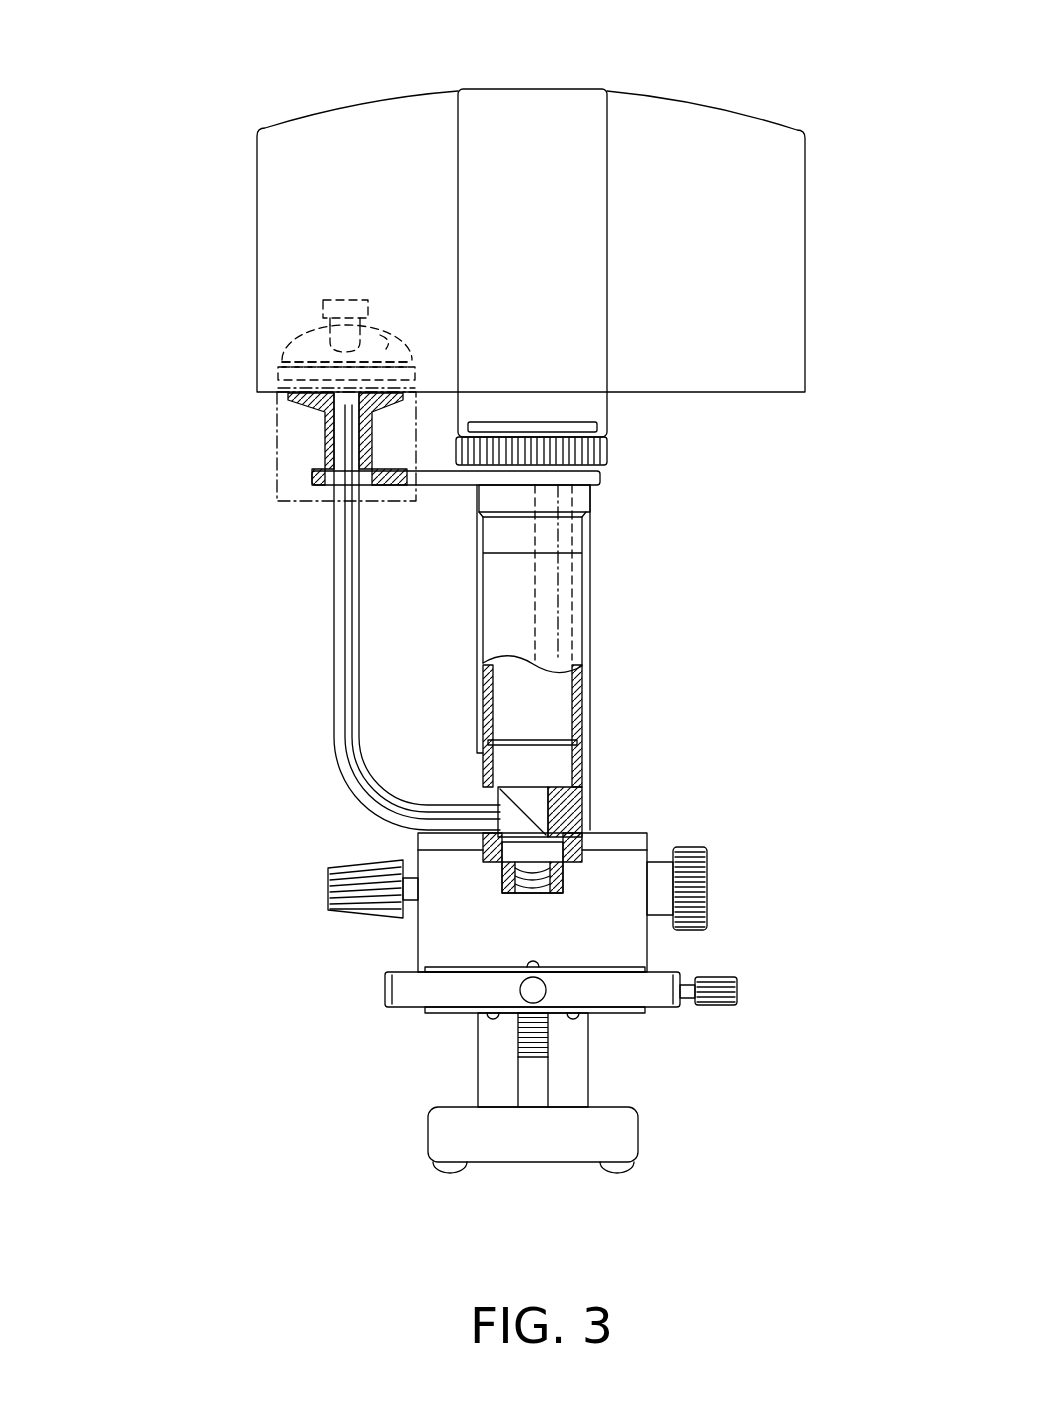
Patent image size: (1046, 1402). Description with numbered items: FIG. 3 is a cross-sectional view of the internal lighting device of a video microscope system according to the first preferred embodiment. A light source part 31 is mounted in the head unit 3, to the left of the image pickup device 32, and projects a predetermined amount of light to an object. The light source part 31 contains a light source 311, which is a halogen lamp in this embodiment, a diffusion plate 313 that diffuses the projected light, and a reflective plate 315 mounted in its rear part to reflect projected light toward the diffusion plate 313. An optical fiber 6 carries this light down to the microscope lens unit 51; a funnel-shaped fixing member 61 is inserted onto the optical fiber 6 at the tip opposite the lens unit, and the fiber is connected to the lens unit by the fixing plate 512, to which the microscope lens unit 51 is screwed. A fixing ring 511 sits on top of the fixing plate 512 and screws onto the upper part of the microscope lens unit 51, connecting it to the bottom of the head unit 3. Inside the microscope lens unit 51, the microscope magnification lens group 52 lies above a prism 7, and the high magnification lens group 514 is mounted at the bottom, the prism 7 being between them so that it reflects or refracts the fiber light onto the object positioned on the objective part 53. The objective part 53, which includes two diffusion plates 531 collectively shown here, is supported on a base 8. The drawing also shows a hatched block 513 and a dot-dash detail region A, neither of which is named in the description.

The head unit 3 is at (703, 128).
The image pickup device 32 is at (494, 106).
The light source part 31 is at (397, 206).
The light source 311 is at (338, 333).
The diffusion plate 313 is at (431, 369).
The reflective plate 315 is at (381, 341).
The fixing ring 511 is at (605, 452).
The fixing plate 512 is at (582, 478).
The microscope lens unit 51 is at (550, 625).
The microscope magnification lens group 52 is at (560, 760).
The holder block 513 is at (582, 808).
The prism 7 is at (508, 812).
The high magnification lens group 514 is at (522, 885).
The diffusion plates 531 is at (622, 872).
The objective part 53 is at (655, 995).
The base 8 is at (445, 1145).
The optical fiber 6 is at (345, 648).
The funnel-shaped fixing member 61 is at (312, 404).
The detail region A is at (302, 501).